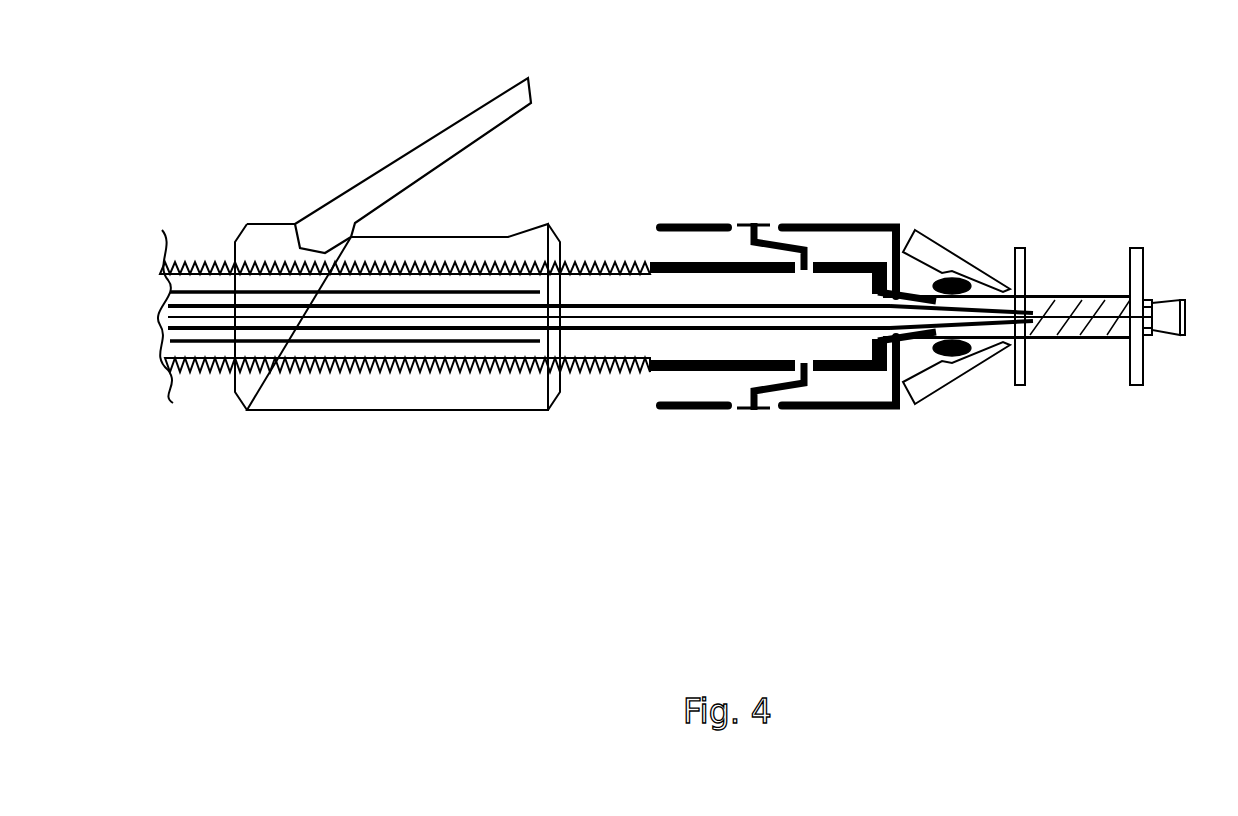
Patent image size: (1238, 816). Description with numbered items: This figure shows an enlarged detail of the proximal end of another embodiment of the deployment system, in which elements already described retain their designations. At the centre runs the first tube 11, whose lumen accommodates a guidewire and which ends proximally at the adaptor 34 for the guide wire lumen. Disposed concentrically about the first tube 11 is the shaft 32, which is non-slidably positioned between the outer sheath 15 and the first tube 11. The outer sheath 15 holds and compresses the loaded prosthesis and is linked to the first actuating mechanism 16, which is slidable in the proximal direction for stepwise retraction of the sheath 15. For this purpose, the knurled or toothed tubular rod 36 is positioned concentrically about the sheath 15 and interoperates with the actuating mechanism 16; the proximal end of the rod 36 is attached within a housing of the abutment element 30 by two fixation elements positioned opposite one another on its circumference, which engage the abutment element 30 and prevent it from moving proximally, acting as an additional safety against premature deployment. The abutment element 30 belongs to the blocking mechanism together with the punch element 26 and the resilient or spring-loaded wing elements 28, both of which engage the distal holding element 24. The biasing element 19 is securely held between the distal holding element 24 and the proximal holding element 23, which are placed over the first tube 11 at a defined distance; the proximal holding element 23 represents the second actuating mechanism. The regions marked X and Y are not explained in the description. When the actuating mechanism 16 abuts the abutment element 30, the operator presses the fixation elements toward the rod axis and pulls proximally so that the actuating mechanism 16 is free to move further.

The first tube 11 is at (592, 317).
The outer sheath 15 is at (197, 292).
The first actuating mechanism 16 is at (365, 145).
The biasing element 19 is at (1098, 295).
The proximal holding element 23 is at (1138, 373).
The distal holding element 24 is at (1027, 373).
The punch element 26 is at (967, 276).
The resilient wing elements 28 is at (923, 243).
The abutment element 30 is at (827, 224).
The shaft 32 is at (197, 330).
The adaptor for the guide wire lumen 34 is at (1182, 305).
The knurled tubular rod 36 is at (600, 373).
The latch hook X is at (753, 222).
The latch hook Y is at (808, 380).